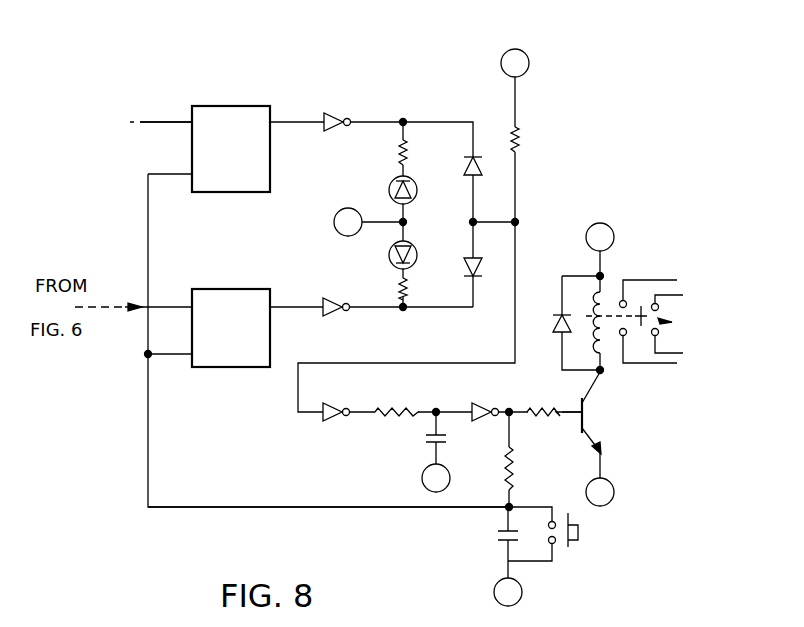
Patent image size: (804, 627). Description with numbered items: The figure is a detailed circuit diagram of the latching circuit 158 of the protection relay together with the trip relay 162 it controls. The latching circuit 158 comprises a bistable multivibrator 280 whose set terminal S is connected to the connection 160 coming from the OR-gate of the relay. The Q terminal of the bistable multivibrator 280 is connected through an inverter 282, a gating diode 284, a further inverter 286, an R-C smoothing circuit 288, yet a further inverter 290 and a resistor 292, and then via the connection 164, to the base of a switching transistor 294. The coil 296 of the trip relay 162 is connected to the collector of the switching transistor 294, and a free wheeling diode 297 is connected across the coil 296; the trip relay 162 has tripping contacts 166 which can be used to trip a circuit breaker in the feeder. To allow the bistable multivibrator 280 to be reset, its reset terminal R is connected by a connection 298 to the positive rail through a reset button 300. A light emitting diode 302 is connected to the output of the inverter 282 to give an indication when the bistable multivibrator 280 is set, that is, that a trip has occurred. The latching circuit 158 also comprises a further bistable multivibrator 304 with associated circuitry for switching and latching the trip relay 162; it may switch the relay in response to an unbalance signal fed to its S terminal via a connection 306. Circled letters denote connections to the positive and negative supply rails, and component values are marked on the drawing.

The latching circuit 158 is at (366, 74).
The connection 306 is at (150, 122).
The further bistable multivibrator 304 is at (245, 192).
The connection 160 is at (172, 306).
The bistable multivibrator 280 is at (245, 367).
The inverter 282 is at (338, 313).
The light emitting diode 302 is at (392, 261).
The gating diode 284 is at (462, 268).
The free wheeling diode 297 is at (553, 328).
The trip relay 162 is at (628, 236).
The coil 296 is at (605, 293).
The tripping contacts 166 is at (672, 322).
The resistor 292 is at (530, 409).
The switching transistor 294 is at (592, 413).
The connection 164 is at (572, 416).
The further inverter 286 is at (338, 419).
The R-C smoothing circuit 288 is at (412, 430).
The inverter 290 is at (490, 421).
The connection 298 is at (265, 508).
The reset button 300 is at (580, 536).